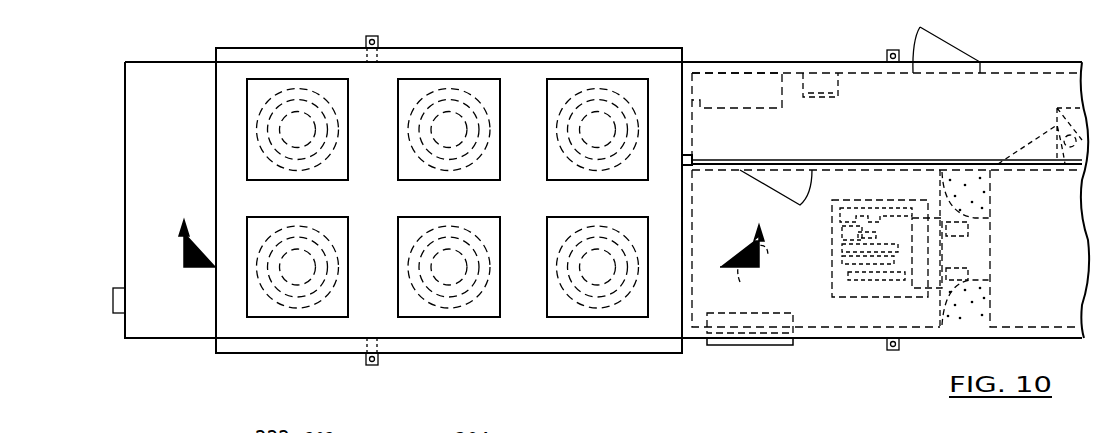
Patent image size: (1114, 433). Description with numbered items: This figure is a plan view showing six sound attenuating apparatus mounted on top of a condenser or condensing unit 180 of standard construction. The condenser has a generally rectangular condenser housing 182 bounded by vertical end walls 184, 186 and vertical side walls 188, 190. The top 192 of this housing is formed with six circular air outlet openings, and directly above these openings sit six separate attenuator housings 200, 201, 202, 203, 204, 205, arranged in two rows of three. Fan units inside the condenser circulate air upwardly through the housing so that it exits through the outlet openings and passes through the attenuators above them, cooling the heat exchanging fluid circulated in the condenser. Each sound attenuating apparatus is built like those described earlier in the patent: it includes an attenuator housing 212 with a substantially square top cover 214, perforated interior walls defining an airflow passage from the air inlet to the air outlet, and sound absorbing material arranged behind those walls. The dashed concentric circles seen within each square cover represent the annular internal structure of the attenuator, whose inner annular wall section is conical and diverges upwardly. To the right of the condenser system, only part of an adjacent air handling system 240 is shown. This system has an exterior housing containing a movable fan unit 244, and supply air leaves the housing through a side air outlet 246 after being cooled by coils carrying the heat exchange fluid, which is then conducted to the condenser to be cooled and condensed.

The condensing unit 180 is at (231, 333).
The condenser housing 182 is at (410, 342).
The vertical end wall 184 is at (125, 187).
The vertical end wall 186 is at (690, 155).
The vertical side wall 188 is at (553, 62).
The vertical side wall 190 is at (583, 340).
The top 192 is at (648, 333).
The attenuator housing 200 is at (254, 84).
The attenuator housing 201 is at (408, 88).
The attenuator housing 202 is at (633, 88).
The attenuator housing 203 is at (317, 225).
The attenuator housing 204 is at (478, 225).
The attenuator housing 205 is at (612, 225).
The attenuator housing 212 is at (268, 310).
The top cover 214 is at (488, 310).
The air handling system 240 is at (797, 62).
The movable fan unit 244 is at (866, 280).
The side air outlet 246 is at (738, 346).